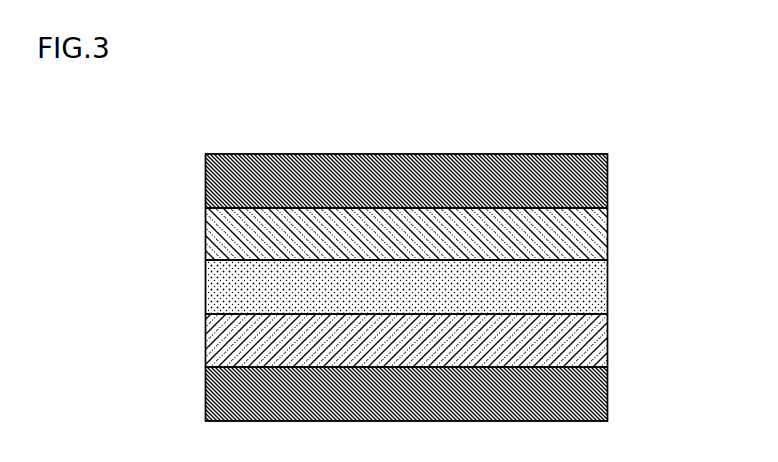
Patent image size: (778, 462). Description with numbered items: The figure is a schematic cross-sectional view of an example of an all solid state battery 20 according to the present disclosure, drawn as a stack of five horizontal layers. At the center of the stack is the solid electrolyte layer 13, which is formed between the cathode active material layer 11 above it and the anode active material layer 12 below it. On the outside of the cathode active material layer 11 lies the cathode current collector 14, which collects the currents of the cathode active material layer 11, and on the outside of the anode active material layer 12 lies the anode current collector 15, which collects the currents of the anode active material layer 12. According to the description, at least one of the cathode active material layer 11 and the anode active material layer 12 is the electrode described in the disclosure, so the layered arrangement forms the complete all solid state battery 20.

The all solid state battery 20 is at (449, 255).
The cathode current collector 14 is at (586, 179).
The cathode active material layer 11 is at (586, 232).
The solid electrolyte layer 13 is at (586, 285).
The anode active material layer 12 is at (586, 338).
The anode current collector 15 is at (594, 391).